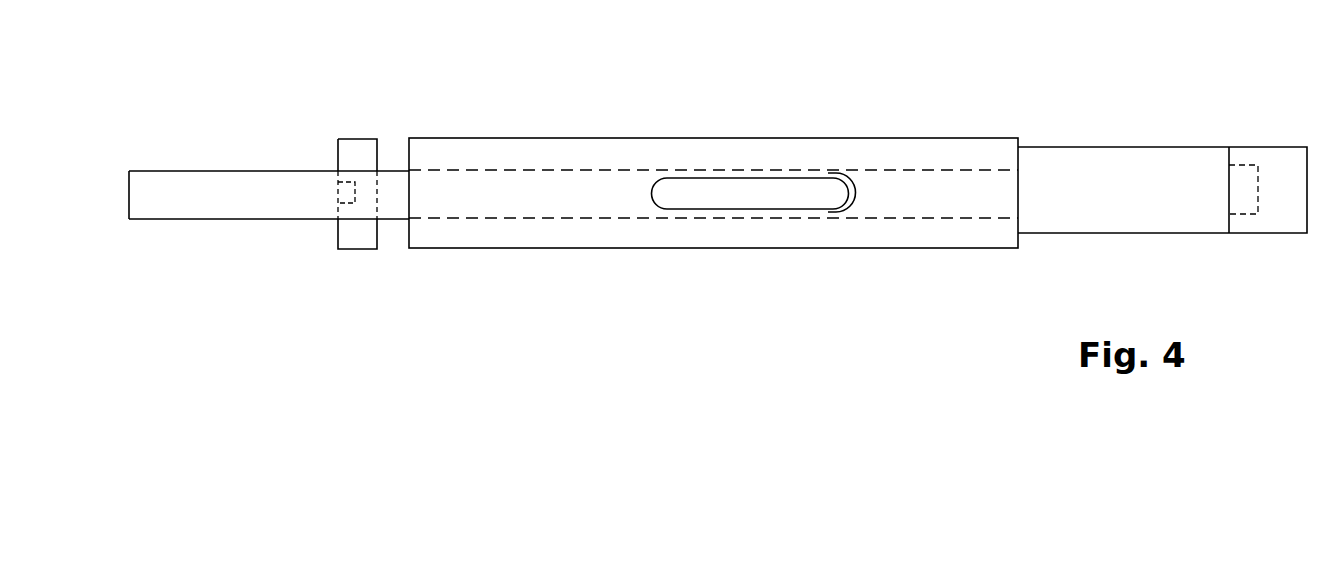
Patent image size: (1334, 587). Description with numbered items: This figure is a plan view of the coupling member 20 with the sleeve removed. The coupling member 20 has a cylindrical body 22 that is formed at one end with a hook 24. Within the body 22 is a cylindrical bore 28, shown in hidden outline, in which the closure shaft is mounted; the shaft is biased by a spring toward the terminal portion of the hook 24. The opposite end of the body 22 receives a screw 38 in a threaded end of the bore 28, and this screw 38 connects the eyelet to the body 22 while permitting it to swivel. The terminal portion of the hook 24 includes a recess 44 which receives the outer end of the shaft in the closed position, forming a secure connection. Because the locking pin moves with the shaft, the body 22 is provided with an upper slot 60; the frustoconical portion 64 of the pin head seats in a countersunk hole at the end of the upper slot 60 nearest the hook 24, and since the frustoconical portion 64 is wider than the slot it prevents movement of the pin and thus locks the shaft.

The coupling member 20 is at (771, 68).
The cylindrical body 22 is at (463, 258).
The hook 24 is at (1134, 139).
The cylindrical bore 28 is at (581, 211).
The screw 38 is at (356, 258).
The recess 44 is at (1245, 201).
The upper slot 60 is at (688, 208).
The frustoconical portion 64 is at (851, 219).